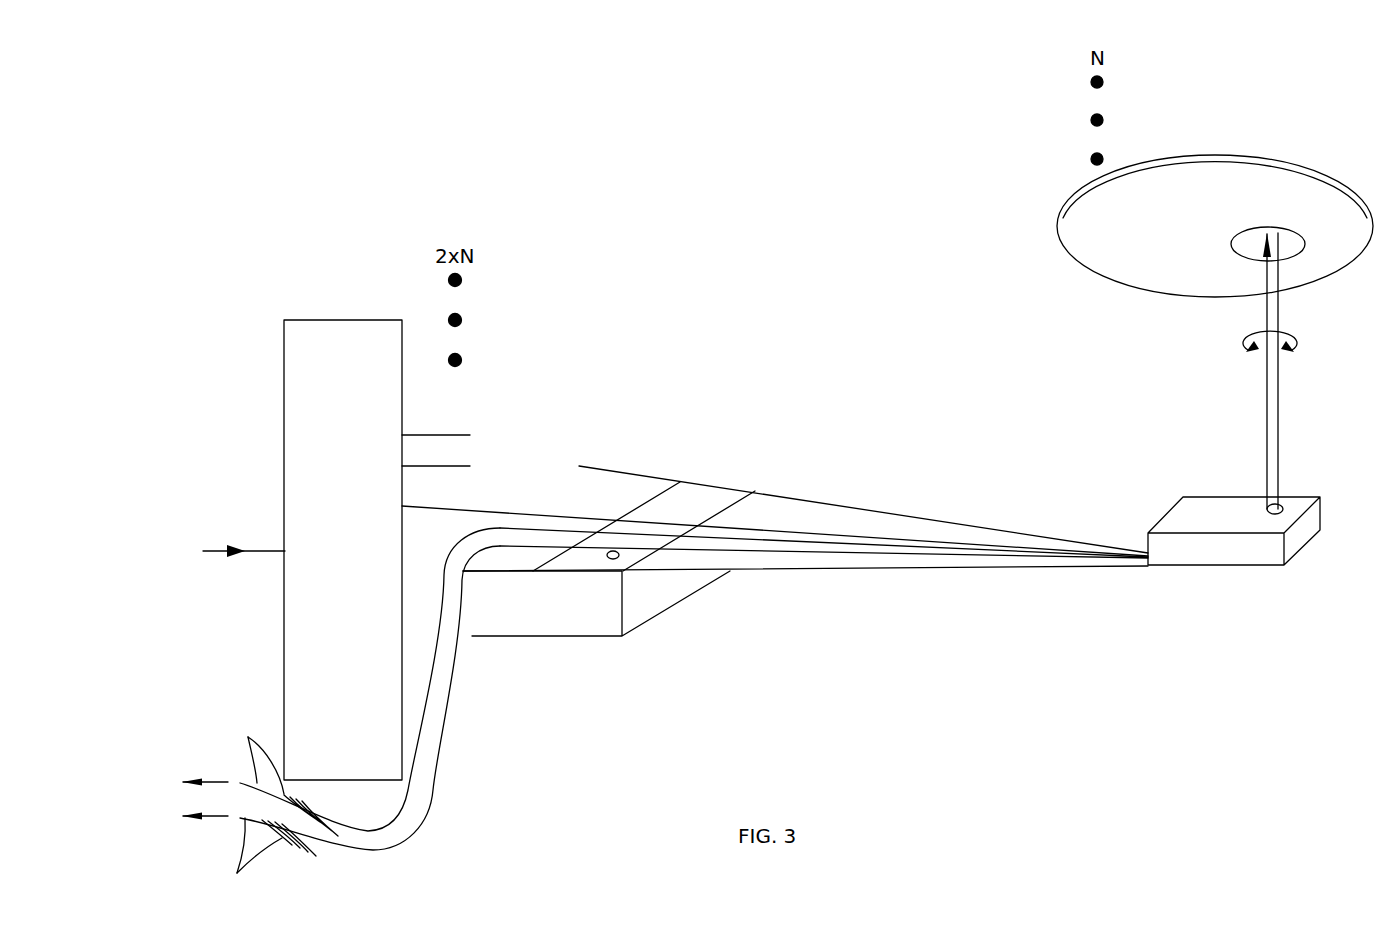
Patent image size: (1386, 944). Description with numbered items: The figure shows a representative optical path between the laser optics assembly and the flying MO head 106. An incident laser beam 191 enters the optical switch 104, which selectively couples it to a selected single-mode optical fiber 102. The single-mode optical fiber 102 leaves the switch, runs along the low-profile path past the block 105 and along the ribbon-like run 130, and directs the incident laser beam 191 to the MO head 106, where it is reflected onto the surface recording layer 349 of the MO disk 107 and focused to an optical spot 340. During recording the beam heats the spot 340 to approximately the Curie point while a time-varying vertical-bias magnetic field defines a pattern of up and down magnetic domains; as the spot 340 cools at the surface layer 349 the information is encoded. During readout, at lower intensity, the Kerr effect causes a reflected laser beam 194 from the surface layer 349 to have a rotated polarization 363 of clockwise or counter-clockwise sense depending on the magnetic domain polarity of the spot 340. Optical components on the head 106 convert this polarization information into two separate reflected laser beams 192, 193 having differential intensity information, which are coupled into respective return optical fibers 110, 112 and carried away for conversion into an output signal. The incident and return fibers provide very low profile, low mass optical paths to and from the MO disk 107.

The single-mode optical fiber 102 is at (527, 513).
The optical switch 104 is at (322, 318).
The fiber connector block 105 is at (555, 640).
The flying MO head 106 is at (1227, 567).
The MO disk 107 is at (1095, 277).
The return optical fiber 110 is at (285, 773).
The return optical fiber 112 is at (269, 860).
The fiber ribbon / actuator arm 130 is at (888, 568).
The incident laser beam 191 is at (232, 558).
The reflected laser beam 192 is at (202, 766).
The reflected laser beam 193 is at (202, 834).
The reflected laser beam 194 is at (1280, 437).
The optical spot 340 is at (1293, 242).
The surface recording layer 349 is at (1215, 178).
The rotated polarization 363 is at (1293, 343).